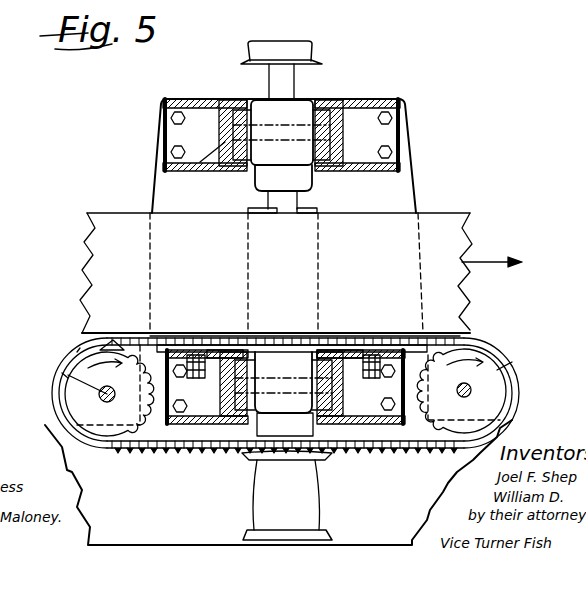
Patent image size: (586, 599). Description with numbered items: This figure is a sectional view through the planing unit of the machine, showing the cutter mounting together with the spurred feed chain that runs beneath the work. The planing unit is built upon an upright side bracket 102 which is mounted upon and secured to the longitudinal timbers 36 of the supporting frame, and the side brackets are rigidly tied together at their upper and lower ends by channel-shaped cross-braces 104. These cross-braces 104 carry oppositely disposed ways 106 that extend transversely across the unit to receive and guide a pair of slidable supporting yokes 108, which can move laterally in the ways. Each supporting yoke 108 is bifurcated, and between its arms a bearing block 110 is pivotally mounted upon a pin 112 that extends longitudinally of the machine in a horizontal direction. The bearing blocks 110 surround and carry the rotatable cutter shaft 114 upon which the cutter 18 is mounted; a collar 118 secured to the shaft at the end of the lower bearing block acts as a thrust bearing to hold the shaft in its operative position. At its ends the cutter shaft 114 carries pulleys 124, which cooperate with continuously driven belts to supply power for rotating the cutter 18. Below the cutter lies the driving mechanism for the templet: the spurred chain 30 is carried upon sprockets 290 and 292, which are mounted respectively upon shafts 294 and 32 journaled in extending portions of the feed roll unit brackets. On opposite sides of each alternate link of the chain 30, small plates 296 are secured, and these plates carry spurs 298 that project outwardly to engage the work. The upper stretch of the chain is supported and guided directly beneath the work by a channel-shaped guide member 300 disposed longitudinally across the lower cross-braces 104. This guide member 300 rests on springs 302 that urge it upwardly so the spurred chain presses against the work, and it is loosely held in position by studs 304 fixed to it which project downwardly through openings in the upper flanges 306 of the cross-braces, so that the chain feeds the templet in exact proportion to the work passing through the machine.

The cutter 18 is at (320, 210).
The spurred chain 30 is at (265, 392).
The shaft 32 is at (471, 388).
The longitudinal timbers 36 is at (278, 482).
The upright side bracket 102 is at (408, 175).
The cross-braces 104 is at (222, 70).
The ways 106 is at (252, 82).
The supporting yokes 108 is at (244, 118).
The bearing block 110 is at (260, 172).
The pin 112 is at (216, 154).
The cutter shaft 114 is at (301, 192).
The collar 118 is at (262, 459).
The pulleys 124 is at (306, 13).
The sprocket 290 is at (63, 392).
The sprocket 292 is at (497, 370).
The shaft 294 is at (62, 373).
The plates 296 is at (77, 352).
The spurs 298 is at (113, 340).
The guide member 300 is at (176, 340).
The springs 302 is at (302, 340).
The studs 304 is at (235, 303).
The upper flanges 306 is at (190, 352).